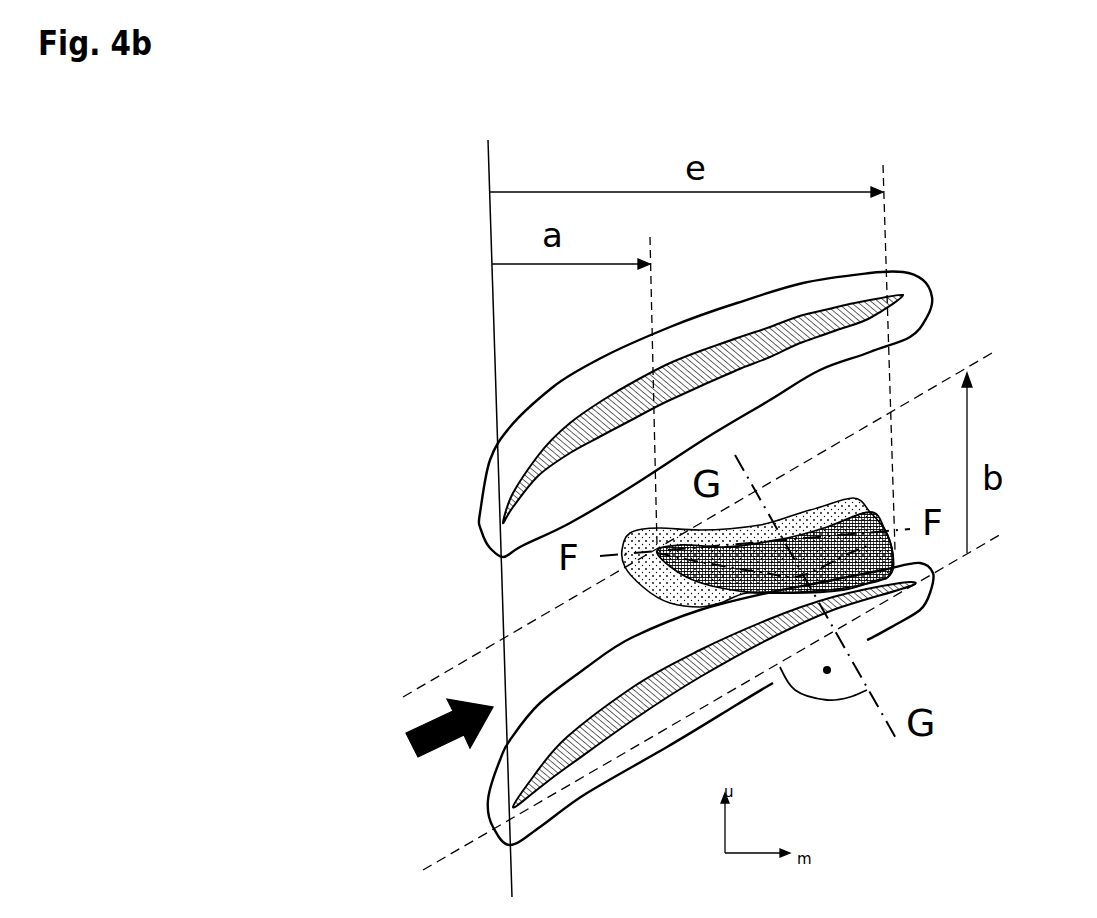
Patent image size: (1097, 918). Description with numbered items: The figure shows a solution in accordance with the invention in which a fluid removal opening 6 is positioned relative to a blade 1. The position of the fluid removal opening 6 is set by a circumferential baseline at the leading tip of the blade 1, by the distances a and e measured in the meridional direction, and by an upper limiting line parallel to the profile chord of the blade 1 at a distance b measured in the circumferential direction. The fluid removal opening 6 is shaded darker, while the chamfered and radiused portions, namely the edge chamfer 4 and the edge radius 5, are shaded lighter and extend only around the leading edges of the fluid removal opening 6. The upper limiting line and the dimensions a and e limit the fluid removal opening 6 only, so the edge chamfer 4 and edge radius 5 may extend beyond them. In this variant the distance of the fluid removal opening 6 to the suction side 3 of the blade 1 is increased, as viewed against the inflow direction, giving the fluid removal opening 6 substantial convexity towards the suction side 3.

The blade 1 is at (537, 457).
The suction side of blade 3 is at (578, 695).
The edge chamfer 4 is at (737, 571).
The edge radius 5 is at (660, 592).
The fluid removal opening 6 is at (837, 543).